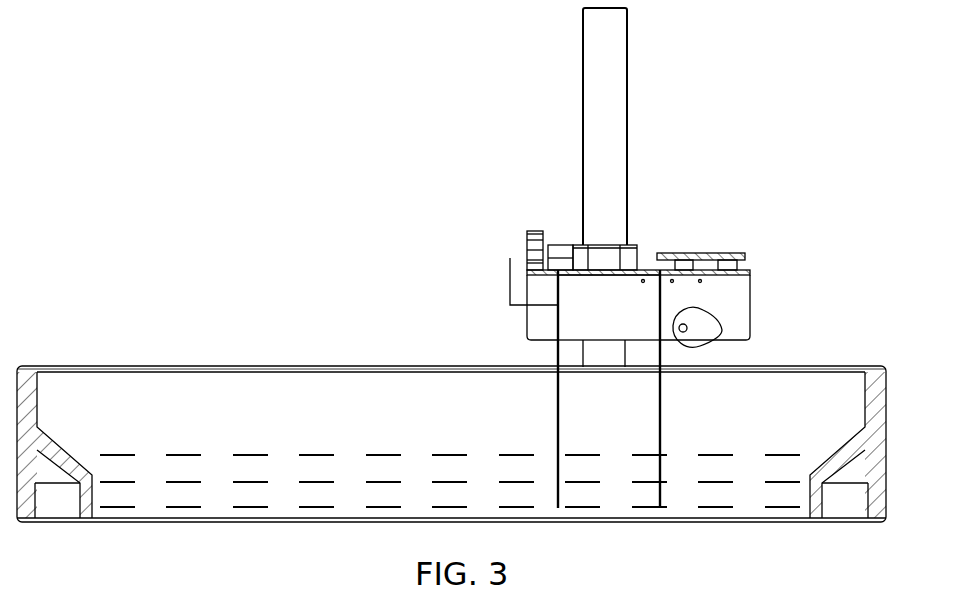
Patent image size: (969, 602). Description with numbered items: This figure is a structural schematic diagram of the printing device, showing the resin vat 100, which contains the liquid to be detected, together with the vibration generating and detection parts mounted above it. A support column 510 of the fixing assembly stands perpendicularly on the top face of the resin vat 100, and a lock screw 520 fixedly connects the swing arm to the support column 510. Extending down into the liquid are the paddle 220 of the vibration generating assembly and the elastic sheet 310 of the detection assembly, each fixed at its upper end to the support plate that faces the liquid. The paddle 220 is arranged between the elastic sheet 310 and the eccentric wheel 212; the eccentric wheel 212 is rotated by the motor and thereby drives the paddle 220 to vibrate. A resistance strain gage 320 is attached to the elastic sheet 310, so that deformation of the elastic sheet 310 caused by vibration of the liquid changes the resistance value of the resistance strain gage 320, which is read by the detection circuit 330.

The resin vat 100 is at (33, 378).
The support column 510 is at (607, 110).
The lock screw 520 is at (530, 228).
The resistance strain gage 320 is at (552, 360).
The detection circuit 330 is at (713, 253).
The eccentric wheel 212 is at (697, 325).
The elastic sheet 310 is at (558, 433).
The paddle 220 is at (663, 423).